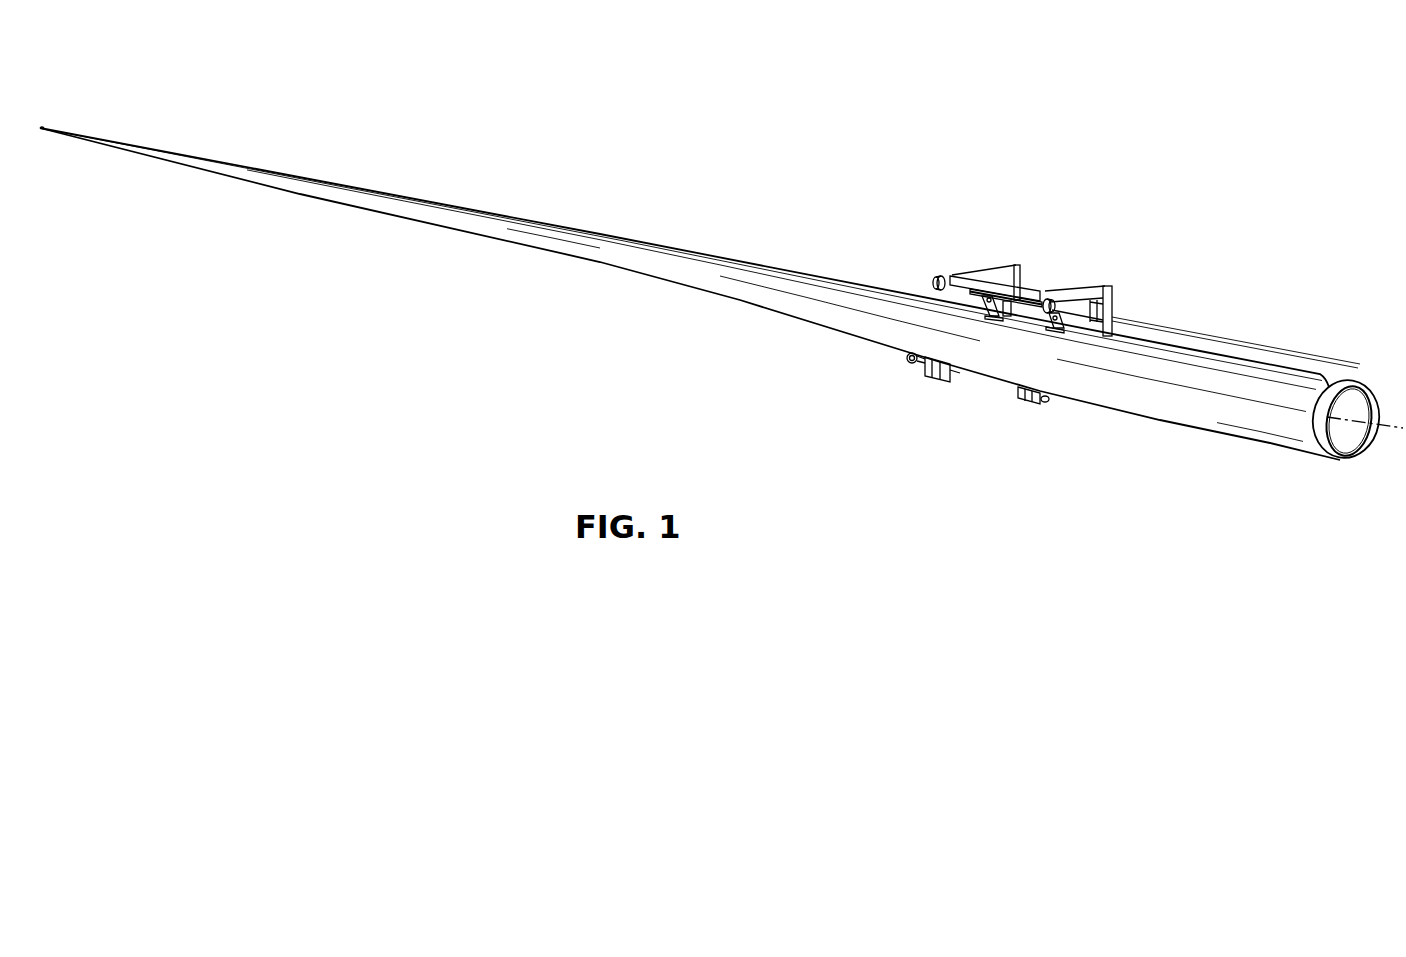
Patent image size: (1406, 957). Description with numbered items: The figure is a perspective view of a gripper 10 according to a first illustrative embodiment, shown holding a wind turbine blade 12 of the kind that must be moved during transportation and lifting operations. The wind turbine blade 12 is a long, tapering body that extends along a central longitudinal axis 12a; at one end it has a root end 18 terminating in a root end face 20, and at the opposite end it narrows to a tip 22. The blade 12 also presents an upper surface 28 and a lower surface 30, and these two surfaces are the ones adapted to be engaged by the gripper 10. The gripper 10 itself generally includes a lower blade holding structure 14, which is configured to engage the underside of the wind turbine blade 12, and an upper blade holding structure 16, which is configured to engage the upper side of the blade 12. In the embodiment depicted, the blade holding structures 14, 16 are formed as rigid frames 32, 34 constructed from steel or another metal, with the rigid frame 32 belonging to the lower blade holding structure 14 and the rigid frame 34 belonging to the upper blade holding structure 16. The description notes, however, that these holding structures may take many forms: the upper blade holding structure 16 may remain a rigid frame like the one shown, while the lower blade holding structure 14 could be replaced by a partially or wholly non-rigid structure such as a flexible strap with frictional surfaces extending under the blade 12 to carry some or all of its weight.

The gripper 10 is at (1146, 288).
The wind turbine blade 12 is at (719, 296).
The central longitudinal axis 12a is at (1398, 432).
The lower blade holding structure 14 is at (963, 395).
The upper blade holding structure 16 is at (1112, 308).
The root end 18 is at (1341, 411).
The root end face 20 is at (1358, 458).
The tip 22 is at (40, 128).
The upper surface 28 is at (866, 292).
The lower surface 30 is at (877, 341).
The rigid frame 32 is at (927, 367).
The rigid frame 34 is at (1073, 298).